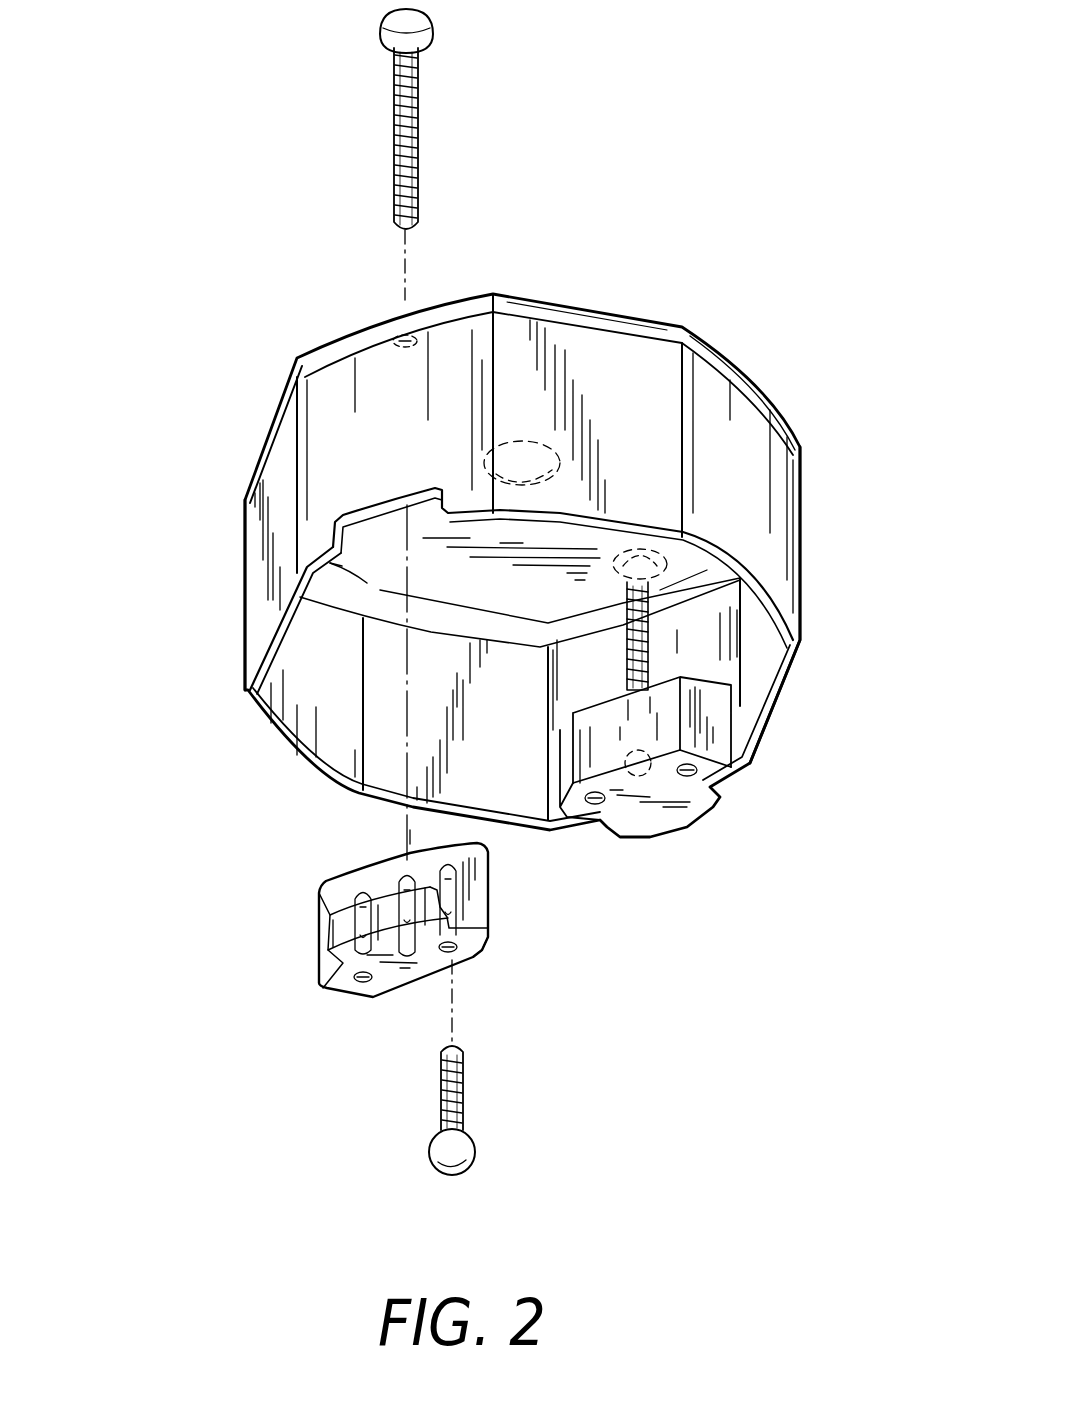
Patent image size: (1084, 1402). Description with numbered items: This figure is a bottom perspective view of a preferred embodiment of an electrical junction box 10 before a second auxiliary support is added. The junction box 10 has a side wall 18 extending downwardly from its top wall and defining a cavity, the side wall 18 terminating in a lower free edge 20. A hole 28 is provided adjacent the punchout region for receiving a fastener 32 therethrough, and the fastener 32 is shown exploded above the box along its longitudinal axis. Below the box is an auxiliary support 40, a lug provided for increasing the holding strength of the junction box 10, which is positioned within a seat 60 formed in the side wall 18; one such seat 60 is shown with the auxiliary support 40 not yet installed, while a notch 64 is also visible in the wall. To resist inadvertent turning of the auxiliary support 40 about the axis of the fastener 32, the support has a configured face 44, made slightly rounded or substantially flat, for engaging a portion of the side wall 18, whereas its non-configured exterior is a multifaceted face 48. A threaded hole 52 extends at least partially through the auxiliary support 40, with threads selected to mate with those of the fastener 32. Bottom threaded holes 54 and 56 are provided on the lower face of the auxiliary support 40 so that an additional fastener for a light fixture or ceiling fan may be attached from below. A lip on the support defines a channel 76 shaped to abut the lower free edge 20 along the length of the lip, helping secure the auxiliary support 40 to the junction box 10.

The junction box 10 is at (826, 434).
The side wall 18 is at (247, 557).
The lower free edge 20 is at (775, 722).
The hole 28 is at (432, 342).
The fastener 32 is at (418, 78).
The auxiliary support 40 is at (318, 929).
The configured face 44 is at (320, 893).
The multifaceted face 48 is at (487, 948).
The threaded hole 52 is at (650, 793).
The bottom threaded hole 54 is at (465, 955).
The bottom threaded hole 56 is at (353, 990).
The seat 60 is at (342, 565).
The notch 64 is at (382, 509).
The channel 76 is at (453, 903).